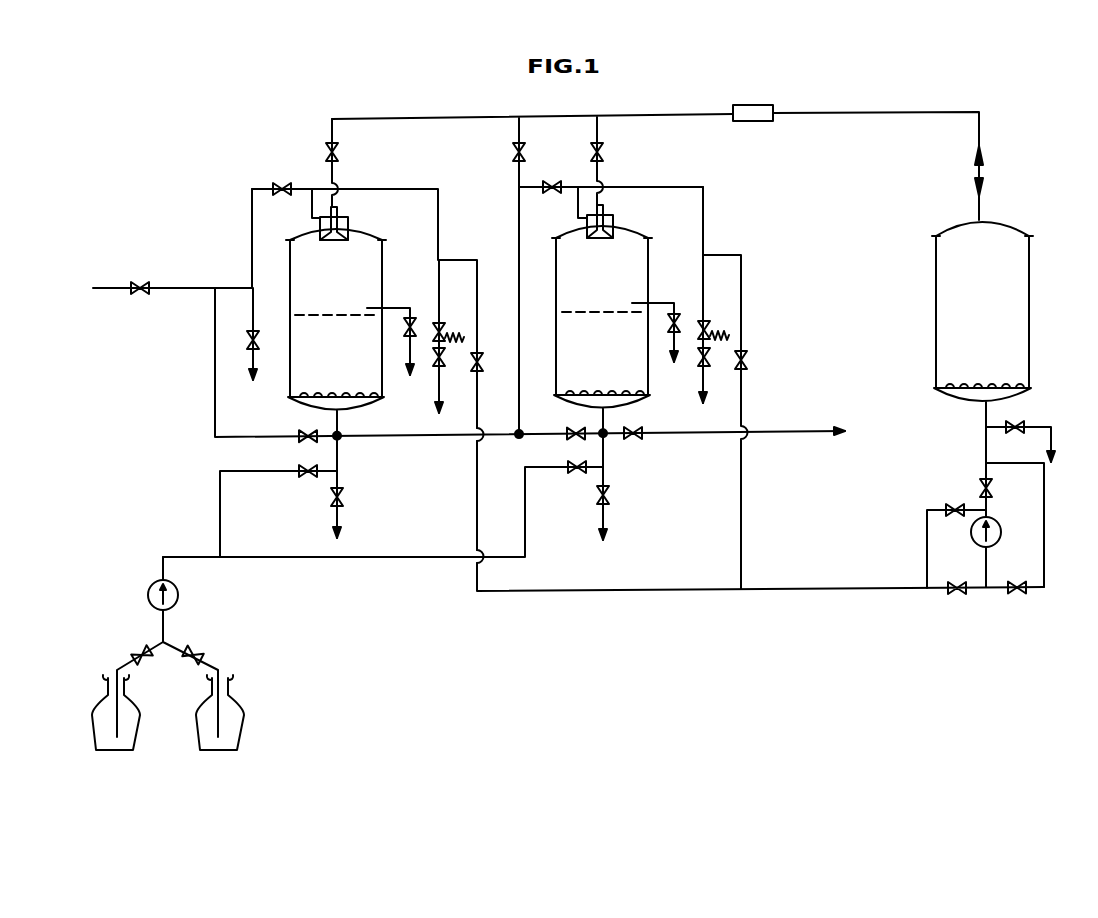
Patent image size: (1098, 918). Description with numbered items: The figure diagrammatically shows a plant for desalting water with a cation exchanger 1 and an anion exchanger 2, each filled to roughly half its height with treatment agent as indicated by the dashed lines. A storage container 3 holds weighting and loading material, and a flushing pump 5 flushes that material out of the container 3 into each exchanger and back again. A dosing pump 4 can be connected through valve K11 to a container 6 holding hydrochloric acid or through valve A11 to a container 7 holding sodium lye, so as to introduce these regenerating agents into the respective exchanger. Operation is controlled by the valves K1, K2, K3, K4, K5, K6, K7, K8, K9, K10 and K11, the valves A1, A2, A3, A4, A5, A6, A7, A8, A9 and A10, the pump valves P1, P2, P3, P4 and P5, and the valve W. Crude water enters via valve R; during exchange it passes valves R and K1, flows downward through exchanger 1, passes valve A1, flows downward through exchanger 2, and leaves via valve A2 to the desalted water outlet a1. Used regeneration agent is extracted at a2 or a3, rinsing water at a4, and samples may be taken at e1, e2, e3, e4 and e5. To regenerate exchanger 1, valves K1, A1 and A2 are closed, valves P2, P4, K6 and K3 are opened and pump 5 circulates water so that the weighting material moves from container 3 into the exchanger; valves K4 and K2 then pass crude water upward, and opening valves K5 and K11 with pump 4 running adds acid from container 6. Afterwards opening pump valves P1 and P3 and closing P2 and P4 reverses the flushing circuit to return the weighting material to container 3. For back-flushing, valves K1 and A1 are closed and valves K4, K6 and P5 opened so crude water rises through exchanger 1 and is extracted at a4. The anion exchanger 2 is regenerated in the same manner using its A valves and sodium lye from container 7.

The cation exchanger 1 is at (341, 354).
The anion exchanger 2 is at (608, 349).
The storage container 3 is at (987, 326).
The dosing pump 4 is at (172, 595).
The flushing pump 5 is at (995, 532).
The container 6 is at (133, 730).
The container 7 is at (237, 728).
The valve R is at (140, 275).
The valve W is at (531, 153).
The valve K1 is at (282, 177).
The valve K2 is at (451, 372).
The valve K3 is at (489, 363).
The valve K4 is at (309, 425).
The valve K5 is at (308, 481).
The valve K6 is at (345, 153).
The valve K7 is at (265, 328).
The valve K8 is at (350, 481).
The valve K9 is at (451, 302).
The valve K10 is at (417, 298).
The valve K11 is at (136, 643).
The valve A1 is at (553, 176).
The valve A2 is at (633, 422).
The valve A3 is at (716, 359).
The valve A4 is at (753, 361).
The valve A5 is at (575, 423).
The valve A6 is at (575, 479).
The valve A7 is at (609, 153).
The valve A8 is at (615, 481).
The valve A9 is at (716, 321).
The valve A10 is at (681, 297).
The valve A11 is at (199, 643).
The pump valve P1 is at (954, 498).
The pump valve P2 is at (959, 575).
The pump valve P3 is at (1019, 575).
The pump valve P4 is at (999, 492).
The valve P5 is at (1018, 416).
The sample extraction point e1 is at (256, 387).
The sample extraction point e2 is at (413, 381).
The sample extraction point e3 is at (673, 372).
The sample extraction point e4 is at (350, 540).
The sample extraction point e5 is at (617, 541).
The desalted water outlet a1 is at (853, 434).
The used regeneration agent outlet a2 is at (452, 413).
The used regeneration agent outlet a3 is at (716, 406).
The rinsing water outlet a4 is at (1062, 461).